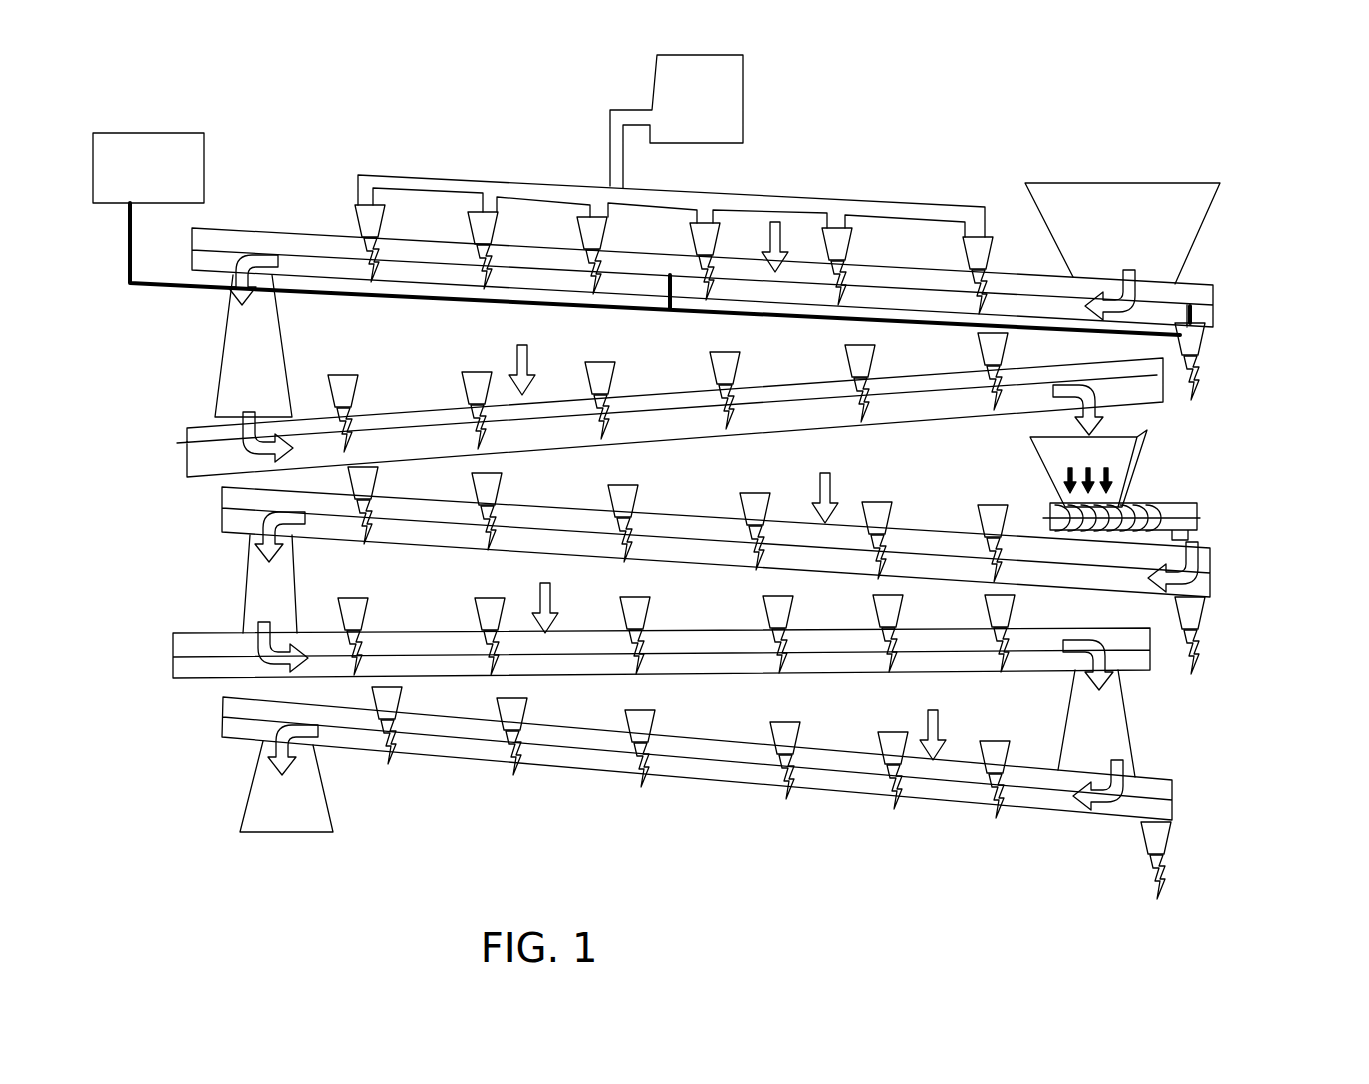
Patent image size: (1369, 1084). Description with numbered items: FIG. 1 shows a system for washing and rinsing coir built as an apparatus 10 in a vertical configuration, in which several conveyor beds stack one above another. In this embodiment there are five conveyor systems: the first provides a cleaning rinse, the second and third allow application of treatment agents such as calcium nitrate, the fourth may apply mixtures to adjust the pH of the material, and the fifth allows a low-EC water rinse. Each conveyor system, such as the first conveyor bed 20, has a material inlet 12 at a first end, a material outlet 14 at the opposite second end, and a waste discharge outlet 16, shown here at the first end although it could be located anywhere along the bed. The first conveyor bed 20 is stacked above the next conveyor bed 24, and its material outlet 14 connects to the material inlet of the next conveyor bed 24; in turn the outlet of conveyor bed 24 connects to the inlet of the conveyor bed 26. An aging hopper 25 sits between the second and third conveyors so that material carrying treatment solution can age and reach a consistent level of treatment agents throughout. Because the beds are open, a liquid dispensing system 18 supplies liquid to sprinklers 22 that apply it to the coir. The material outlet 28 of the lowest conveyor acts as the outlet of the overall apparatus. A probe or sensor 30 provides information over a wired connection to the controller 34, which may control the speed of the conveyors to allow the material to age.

The apparatus 10 is at (988, 97).
The material inlet 12 is at (1205, 183).
The material outlet 14 is at (232, 345).
The waste discharge outlet 16 is at (1205, 348).
The liquid dispensing system 18 is at (744, 99).
The first conveyor bed 20 is at (1213, 285).
The sprinklers 22 is at (850, 265).
The next conveyor bed 24 is at (187, 430).
The aging hopper 25 is at (1135, 481).
The conveyor bed 26 is at (1200, 536).
The material outlet 28 is at (250, 790).
The sensor 30 is at (668, 298).
The controller 34 is at (140, 133).